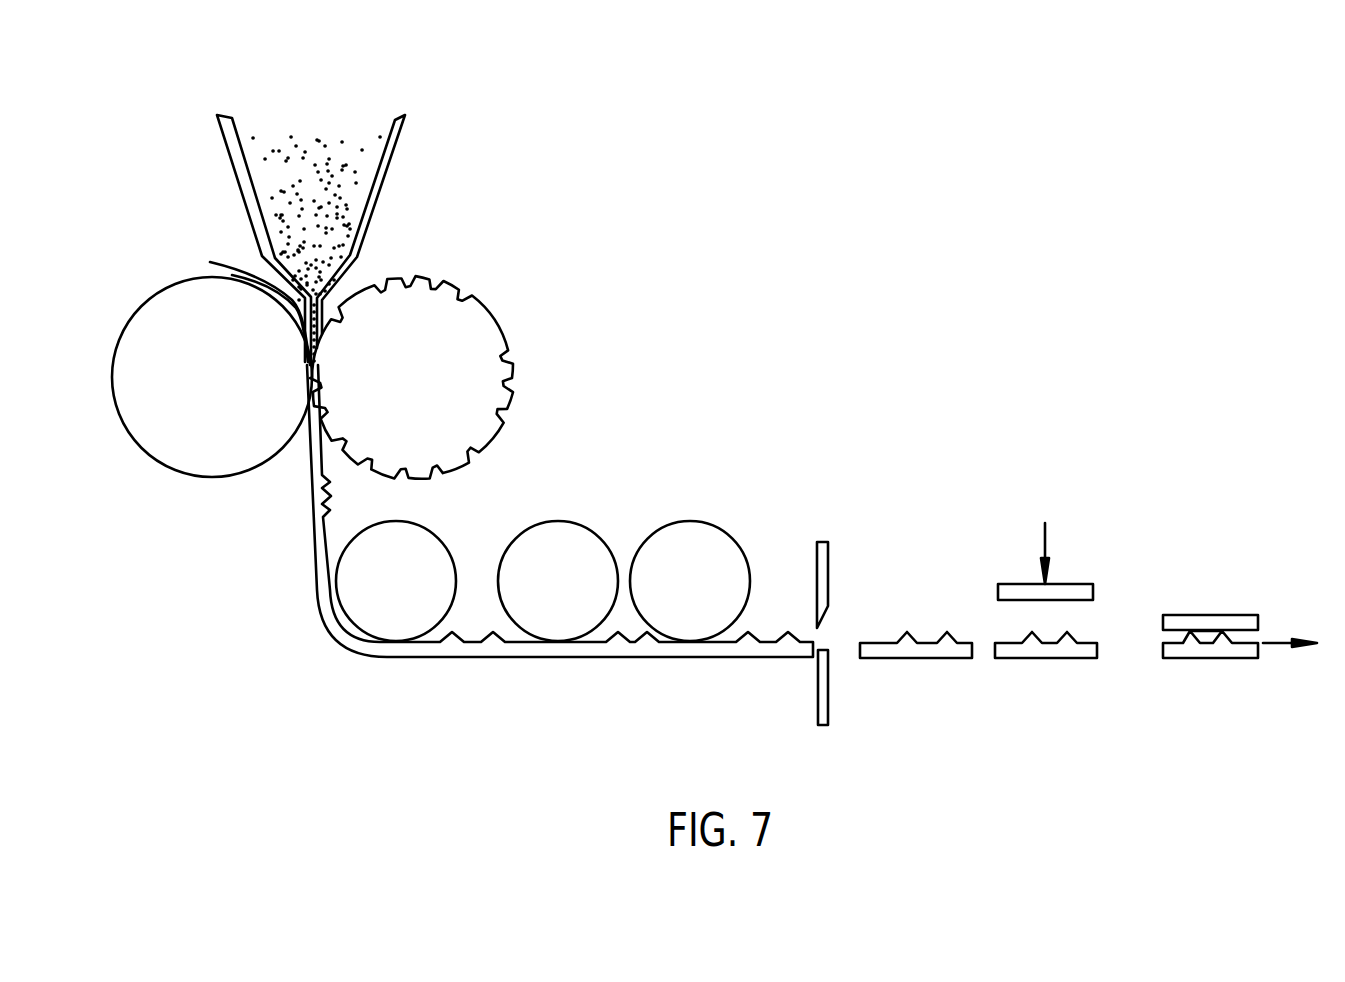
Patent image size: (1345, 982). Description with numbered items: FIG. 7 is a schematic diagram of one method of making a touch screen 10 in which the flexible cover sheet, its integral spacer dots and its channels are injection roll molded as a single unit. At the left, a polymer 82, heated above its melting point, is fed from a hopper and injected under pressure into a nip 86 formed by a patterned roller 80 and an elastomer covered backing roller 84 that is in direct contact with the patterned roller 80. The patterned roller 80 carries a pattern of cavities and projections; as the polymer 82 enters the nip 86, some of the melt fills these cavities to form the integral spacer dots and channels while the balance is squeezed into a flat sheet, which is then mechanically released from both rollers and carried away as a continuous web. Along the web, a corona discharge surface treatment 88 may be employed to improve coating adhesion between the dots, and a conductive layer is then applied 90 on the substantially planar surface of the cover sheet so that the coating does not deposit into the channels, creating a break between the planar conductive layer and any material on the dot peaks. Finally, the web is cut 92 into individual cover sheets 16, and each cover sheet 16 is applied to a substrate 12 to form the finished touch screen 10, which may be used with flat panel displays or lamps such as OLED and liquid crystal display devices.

The touch screen 10 is at (1228, 596).
The substrate 12 is at (1091, 583).
The cover sheet 16 is at (1085, 657).
The patterned roller 80 is at (480, 303).
The polymer 82 is at (317, 147).
The elastomer covered backing roller 84 is at (136, 314).
The nip 86 is at (210, 262).
The corona discharge surface treatment 88 is at (578, 521).
The conductive layer application 90 is at (712, 521).
The cutting 92 is at (828, 546).